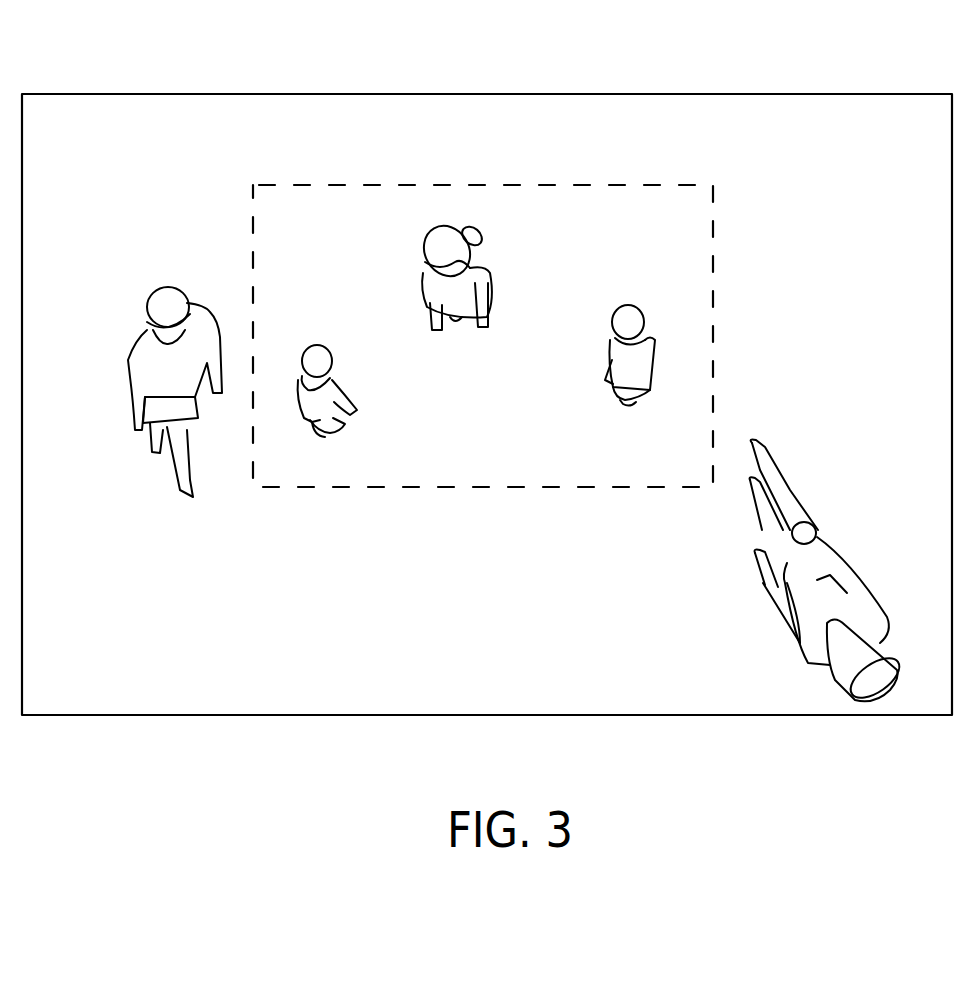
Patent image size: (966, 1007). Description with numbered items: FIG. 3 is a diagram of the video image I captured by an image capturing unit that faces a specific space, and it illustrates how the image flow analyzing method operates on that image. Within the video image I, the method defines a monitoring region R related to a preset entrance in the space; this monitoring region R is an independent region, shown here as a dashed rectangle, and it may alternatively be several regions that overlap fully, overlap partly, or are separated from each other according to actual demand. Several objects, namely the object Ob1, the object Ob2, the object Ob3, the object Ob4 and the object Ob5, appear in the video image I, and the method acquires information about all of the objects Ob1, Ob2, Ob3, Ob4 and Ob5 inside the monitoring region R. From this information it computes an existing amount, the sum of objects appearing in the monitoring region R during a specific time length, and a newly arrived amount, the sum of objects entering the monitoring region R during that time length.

The video image I is at (870, 94).
The monitoring region R is at (655, 185).
The object Ob1 is at (175, 374).
The object Ob2 is at (328, 411).
The object Ob3 is at (475, 273).
The object Ob4 is at (629, 339).
The object Ob5 is at (831, 572).